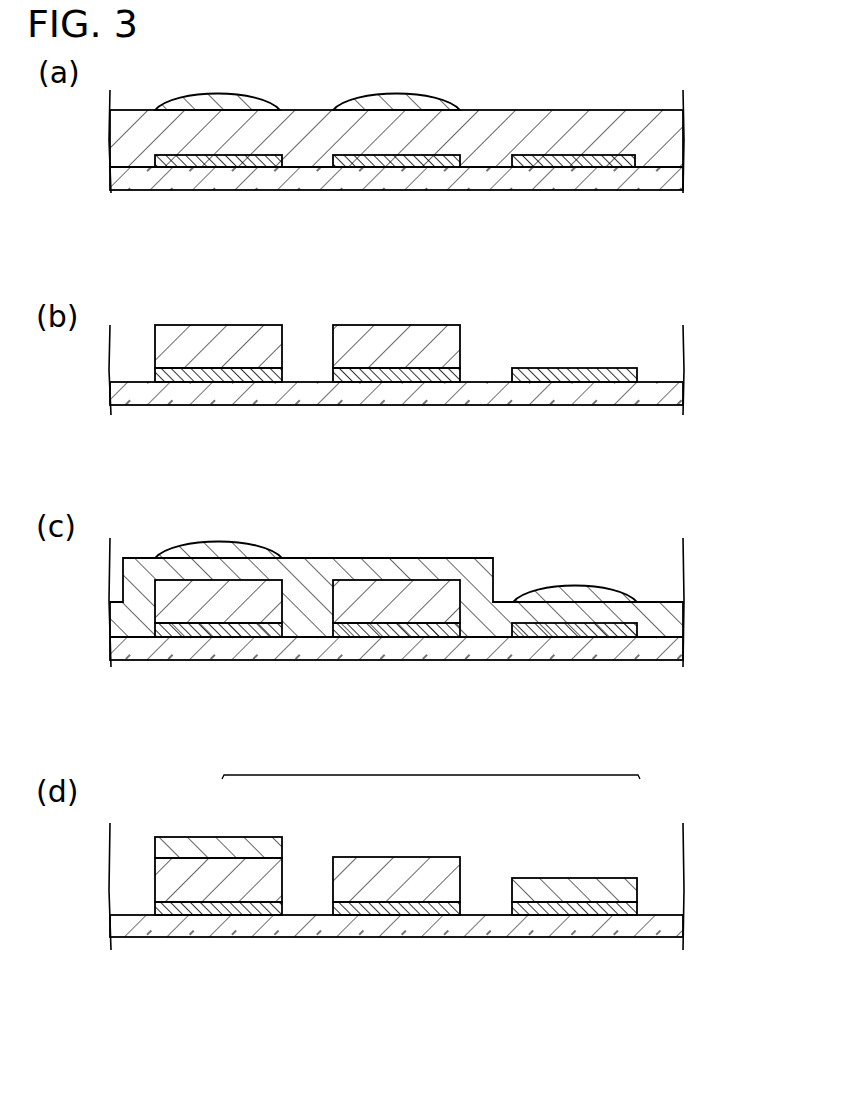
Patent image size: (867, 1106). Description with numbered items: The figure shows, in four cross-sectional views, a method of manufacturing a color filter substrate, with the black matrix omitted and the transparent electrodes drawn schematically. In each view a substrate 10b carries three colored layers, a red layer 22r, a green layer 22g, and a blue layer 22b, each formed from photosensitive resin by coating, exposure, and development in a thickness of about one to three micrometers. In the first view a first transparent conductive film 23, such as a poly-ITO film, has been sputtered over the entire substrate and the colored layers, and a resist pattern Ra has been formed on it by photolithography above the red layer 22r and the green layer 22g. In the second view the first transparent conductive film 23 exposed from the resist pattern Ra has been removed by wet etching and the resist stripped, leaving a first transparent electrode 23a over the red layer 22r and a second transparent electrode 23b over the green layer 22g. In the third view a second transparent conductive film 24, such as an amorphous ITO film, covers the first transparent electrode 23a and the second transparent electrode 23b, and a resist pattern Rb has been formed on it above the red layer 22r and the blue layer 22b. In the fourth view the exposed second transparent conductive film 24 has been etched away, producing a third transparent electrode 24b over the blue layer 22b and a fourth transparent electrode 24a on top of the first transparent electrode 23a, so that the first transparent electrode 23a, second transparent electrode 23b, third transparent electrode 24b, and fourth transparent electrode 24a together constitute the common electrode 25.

The substrate 10b is at (677, 173).
The first transparent conductive film 23 is at (673, 140).
The first transparent electrode 23a is at (227, 333).
The second transparent electrode 23b is at (400, 333).
The second transparent conductive film 24 is at (683, 615).
The fourth transparent electrode 24a is at (233, 840).
The third transparent electrode 24b is at (598, 880).
The common electrode 25 is at (432, 775).
The red layer 22r is at (220, 170).
The green layer 22g is at (397, 170).
The blue layer 22b is at (577, 170).
The resist pattern Ra is at (232, 90).
The resist pattern Rb is at (225, 538).